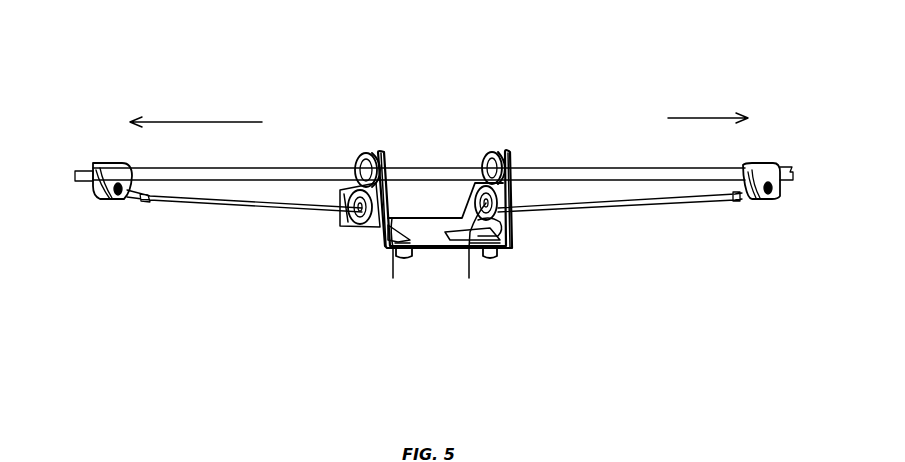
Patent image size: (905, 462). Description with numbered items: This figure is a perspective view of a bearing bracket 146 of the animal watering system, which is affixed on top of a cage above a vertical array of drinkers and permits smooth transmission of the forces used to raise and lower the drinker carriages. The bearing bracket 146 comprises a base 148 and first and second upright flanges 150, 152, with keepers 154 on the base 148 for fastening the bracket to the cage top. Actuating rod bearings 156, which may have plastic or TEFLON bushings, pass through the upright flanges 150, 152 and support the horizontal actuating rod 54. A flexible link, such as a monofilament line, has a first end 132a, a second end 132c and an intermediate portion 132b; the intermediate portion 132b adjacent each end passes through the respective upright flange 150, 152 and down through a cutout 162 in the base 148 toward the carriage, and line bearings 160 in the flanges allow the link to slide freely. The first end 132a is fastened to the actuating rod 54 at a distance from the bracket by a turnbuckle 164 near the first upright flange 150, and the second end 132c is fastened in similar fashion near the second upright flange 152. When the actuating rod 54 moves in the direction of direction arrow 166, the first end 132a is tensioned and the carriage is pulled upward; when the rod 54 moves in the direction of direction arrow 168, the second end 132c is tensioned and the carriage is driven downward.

The actuating rod 54 is at (407, 168).
The bearing bracket 146 is at (312, 290).
The base 148 is at (410, 241).
The first upright flange 150 is at (374, 228).
The second upright flange 152 is at (504, 228).
The keepers 154 is at (398, 258).
The actuating rod bearings 156 is at (358, 162).
The line bearings 160 is at (358, 205).
The cutout 162 is at (394, 226).
The turnbuckle 164 is at (108, 164).
The direction arrow 166 is at (167, 117).
The direction arrow 168 is at (701, 117).
The first end 132a is at (124, 204).
The intermediate portion 132b is at (392, 280).
The second end 132c is at (764, 204).